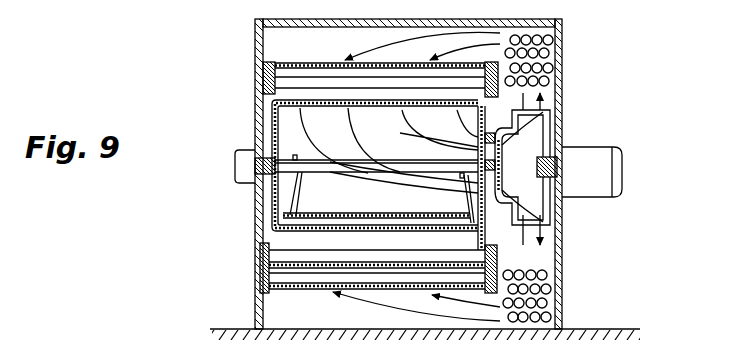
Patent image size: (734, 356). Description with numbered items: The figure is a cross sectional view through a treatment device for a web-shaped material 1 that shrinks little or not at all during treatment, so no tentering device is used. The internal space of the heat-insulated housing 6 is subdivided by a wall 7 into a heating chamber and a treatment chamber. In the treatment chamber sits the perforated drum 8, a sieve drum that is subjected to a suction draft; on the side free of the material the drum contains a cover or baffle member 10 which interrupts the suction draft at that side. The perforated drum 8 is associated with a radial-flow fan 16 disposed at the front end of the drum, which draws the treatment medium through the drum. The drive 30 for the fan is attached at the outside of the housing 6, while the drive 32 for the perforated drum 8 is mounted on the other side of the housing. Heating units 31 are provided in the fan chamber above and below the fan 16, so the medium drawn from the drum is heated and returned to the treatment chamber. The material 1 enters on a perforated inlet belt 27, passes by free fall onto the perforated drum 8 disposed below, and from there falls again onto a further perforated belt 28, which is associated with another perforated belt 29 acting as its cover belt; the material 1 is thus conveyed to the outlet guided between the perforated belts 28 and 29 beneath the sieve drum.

The web-shaped material 1 is at (342, 106).
The heat-insulated housing 6 is at (557, 102).
The longitudinal wall 7 is at (557, 260).
The perforated drum 8 is at (377, 108).
The cover or baffle member 10 is at (368, 215).
The radial-flow fan 16 is at (560, 197).
The inlet belt 27 is at (282, 88).
The further perforated belt 28 is at (262, 284).
The perforated belt 29 is at (262, 255).
The drive 30 is at (612, 165).
The heating units 31 is at (640, 294).
The drive 32 is at (245, 163).